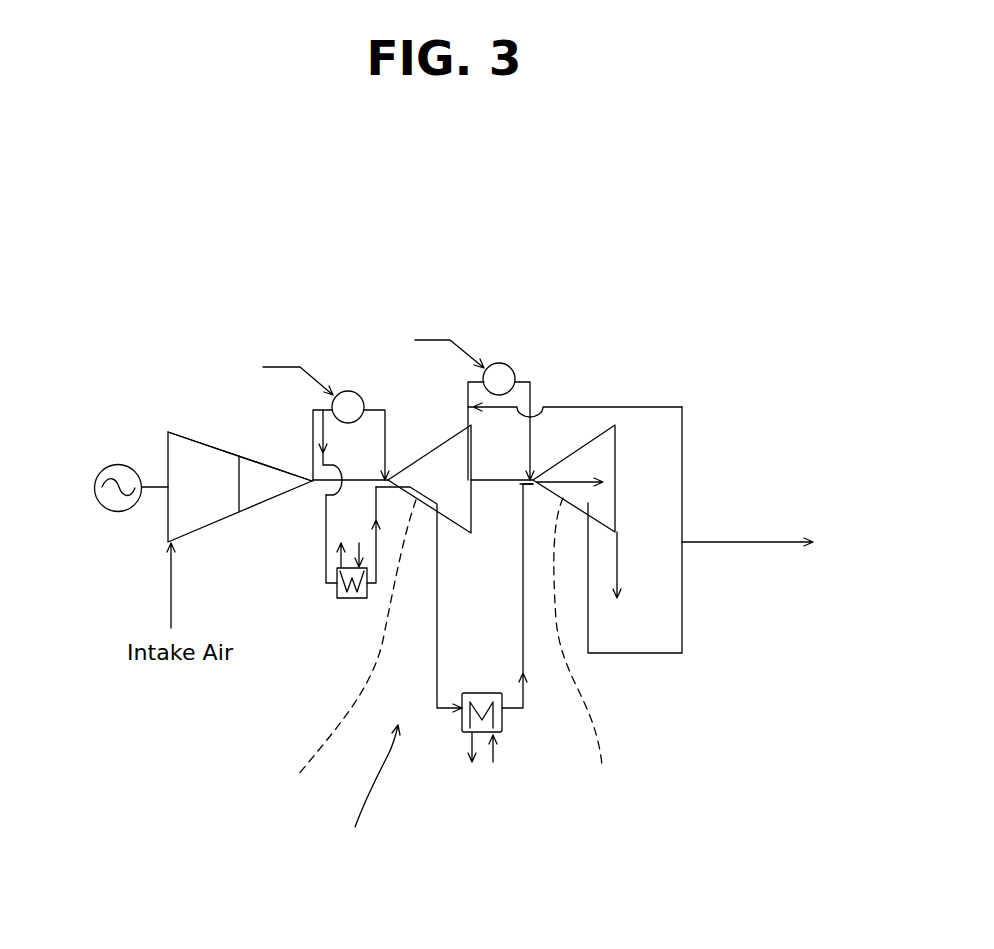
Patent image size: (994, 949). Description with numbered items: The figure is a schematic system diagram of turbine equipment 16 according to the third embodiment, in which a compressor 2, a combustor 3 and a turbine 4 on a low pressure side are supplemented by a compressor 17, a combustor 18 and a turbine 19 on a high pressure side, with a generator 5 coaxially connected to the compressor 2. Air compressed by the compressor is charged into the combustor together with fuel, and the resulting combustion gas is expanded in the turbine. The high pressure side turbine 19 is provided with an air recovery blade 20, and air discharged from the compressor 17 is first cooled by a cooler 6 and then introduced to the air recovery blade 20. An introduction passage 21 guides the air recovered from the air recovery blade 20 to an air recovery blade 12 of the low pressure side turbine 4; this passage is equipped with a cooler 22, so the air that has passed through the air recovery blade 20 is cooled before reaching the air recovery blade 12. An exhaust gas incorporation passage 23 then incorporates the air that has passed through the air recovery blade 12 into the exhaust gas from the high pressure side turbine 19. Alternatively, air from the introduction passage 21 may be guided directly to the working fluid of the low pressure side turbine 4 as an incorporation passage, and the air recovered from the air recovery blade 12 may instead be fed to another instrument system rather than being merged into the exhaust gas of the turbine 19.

The compressor 2 is at (210, 505).
The combustor 3 is at (510, 367).
The turbine 4 is at (602, 448).
The generator 5 is at (122, 465).
The cooler 6 is at (337, 598).
The air recovery blade 12 is at (584, 648).
The turbine equipment 16 is at (368, 795).
The compressor 17 is at (263, 462).
The combustor 18 is at (353, 392).
The turbine 19 is at (473, 512).
The air recovery blade 20 is at (341, 650).
The introduction passage 21 is at (527, 702).
The cooler 22 is at (462, 728).
The exhaust gas incorporation passage 23 is at (682, 595).